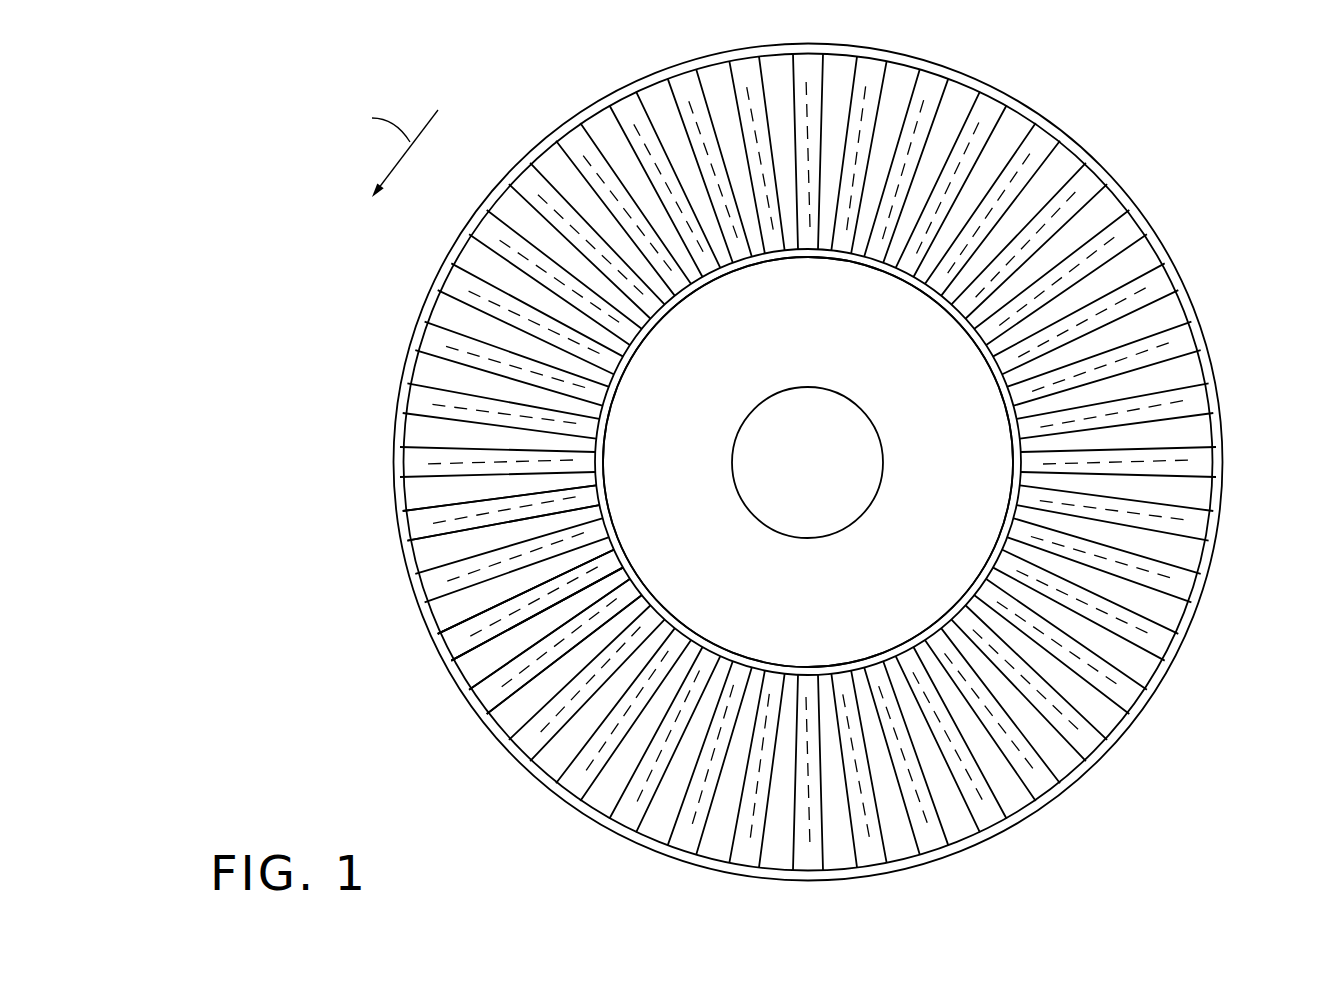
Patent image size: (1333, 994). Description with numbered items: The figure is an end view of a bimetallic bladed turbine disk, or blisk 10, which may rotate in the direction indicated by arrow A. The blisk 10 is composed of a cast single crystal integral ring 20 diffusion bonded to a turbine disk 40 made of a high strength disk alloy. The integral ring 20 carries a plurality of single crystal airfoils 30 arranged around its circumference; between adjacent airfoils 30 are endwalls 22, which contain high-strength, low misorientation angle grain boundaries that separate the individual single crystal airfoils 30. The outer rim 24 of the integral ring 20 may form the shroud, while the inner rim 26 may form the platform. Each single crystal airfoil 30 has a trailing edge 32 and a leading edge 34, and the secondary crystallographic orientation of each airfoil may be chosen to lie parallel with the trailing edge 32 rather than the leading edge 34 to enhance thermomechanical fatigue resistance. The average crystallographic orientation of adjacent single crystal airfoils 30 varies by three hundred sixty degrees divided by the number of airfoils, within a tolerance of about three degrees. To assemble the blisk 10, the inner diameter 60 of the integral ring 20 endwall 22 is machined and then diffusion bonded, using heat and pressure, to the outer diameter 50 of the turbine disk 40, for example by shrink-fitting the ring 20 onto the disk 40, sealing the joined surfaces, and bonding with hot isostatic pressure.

The bladed disk (blisk) 10 is at (1234, 177).
The integral ring of single crystal airfoils 20 is at (445, 292).
The endwalls 22 is at (1073, 140).
The outer rim 24 is at (590, 104).
The inner rim 26 is at (660, 312).
The single crystal airfoils 30 is at (482, 693).
The trailing edge 32 is at (465, 623).
The leading edge 34 is at (417, 543).
The turbine disk 40 is at (737, 528).
The outer diameter 50 is at (1008, 505).
The inner diameter 60 is at (1008, 402).